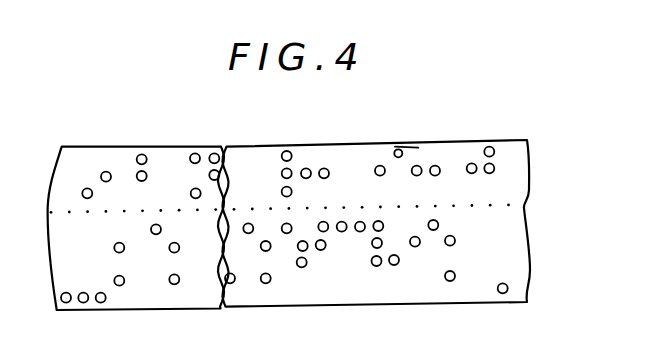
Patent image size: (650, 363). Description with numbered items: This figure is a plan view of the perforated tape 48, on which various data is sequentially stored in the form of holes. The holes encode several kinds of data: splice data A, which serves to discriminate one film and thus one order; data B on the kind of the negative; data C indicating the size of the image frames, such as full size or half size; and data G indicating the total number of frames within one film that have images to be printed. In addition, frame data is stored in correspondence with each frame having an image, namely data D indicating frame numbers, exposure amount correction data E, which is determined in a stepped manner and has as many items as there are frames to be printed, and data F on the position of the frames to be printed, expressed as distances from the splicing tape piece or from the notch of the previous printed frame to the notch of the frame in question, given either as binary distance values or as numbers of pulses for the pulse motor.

The perforated tape 48 is at (343, 305).
The splice data A is at (66, 303).
The data on the kind of the negative B is at (492, 148).
The data indicating the size of the image frames C is at (472, 163).
The data indicating frame numbers D is at (435, 166).
The exposure amount correction data E is at (405, 146).
The data on the position of the frames F is at (380, 166).
The data indicating the total number of the frames G is at (450, 281).